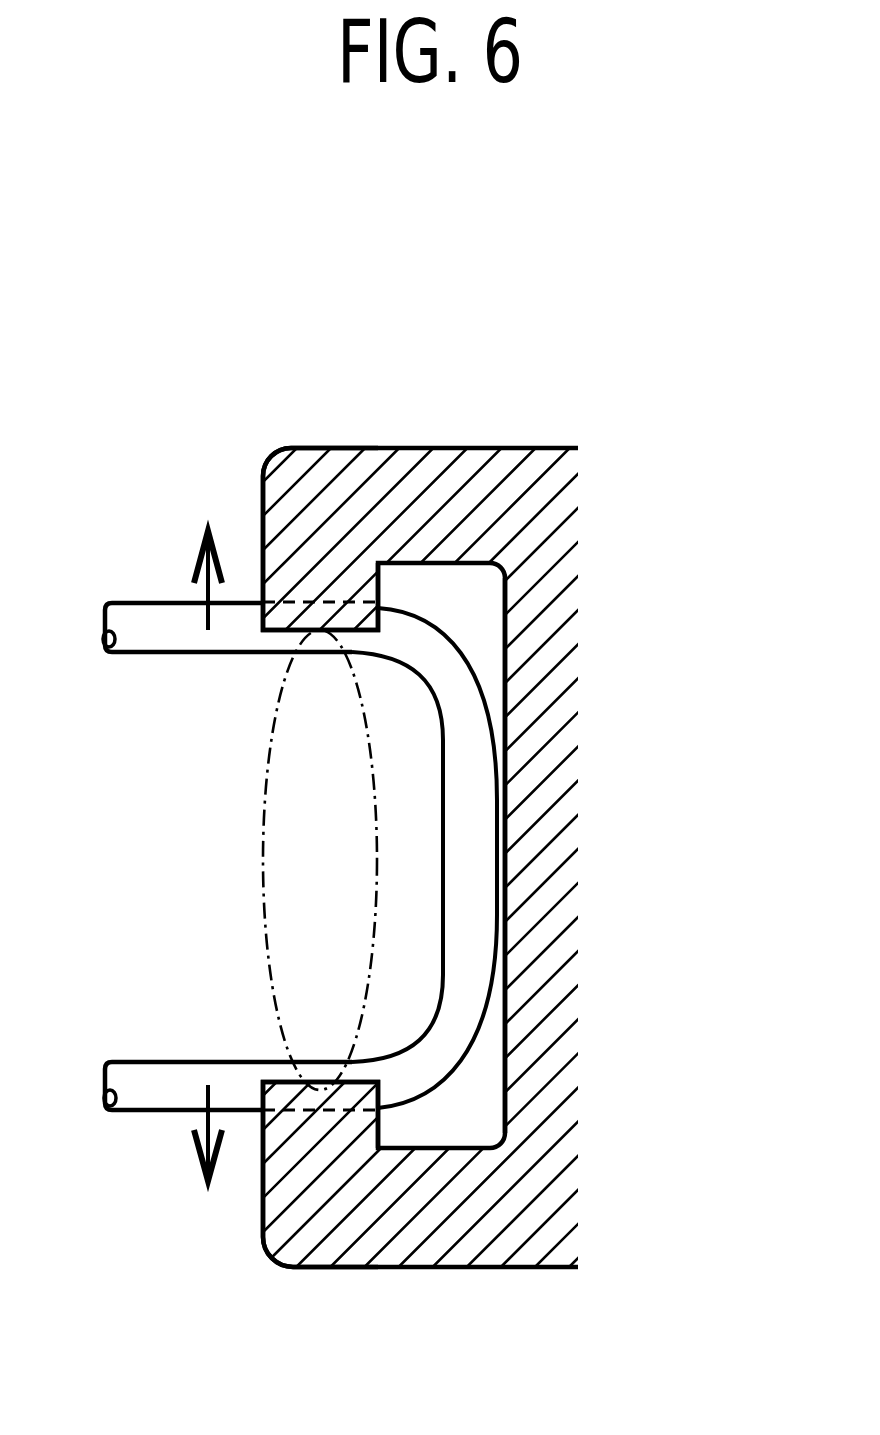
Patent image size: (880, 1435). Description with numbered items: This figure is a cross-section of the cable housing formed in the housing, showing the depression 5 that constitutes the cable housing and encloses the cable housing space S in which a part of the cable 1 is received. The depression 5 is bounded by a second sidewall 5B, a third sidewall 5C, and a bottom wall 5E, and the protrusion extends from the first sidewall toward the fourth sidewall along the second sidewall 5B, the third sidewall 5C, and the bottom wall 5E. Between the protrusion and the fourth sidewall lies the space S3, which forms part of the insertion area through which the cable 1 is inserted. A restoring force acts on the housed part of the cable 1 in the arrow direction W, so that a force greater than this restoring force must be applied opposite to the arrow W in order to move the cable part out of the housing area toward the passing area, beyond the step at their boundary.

The cable 1 is at (125, 590).
The depression 5 is at (460, 1117).
The second sidewall 5B is at (322, 1075).
The third sidewall 5C is at (345, 623).
The bottom wall 5E is at (507, 623).
The cable housing space S is at (497, 625).
The space S3 is at (263, 858).
The arrow direction W is at (214, 862).